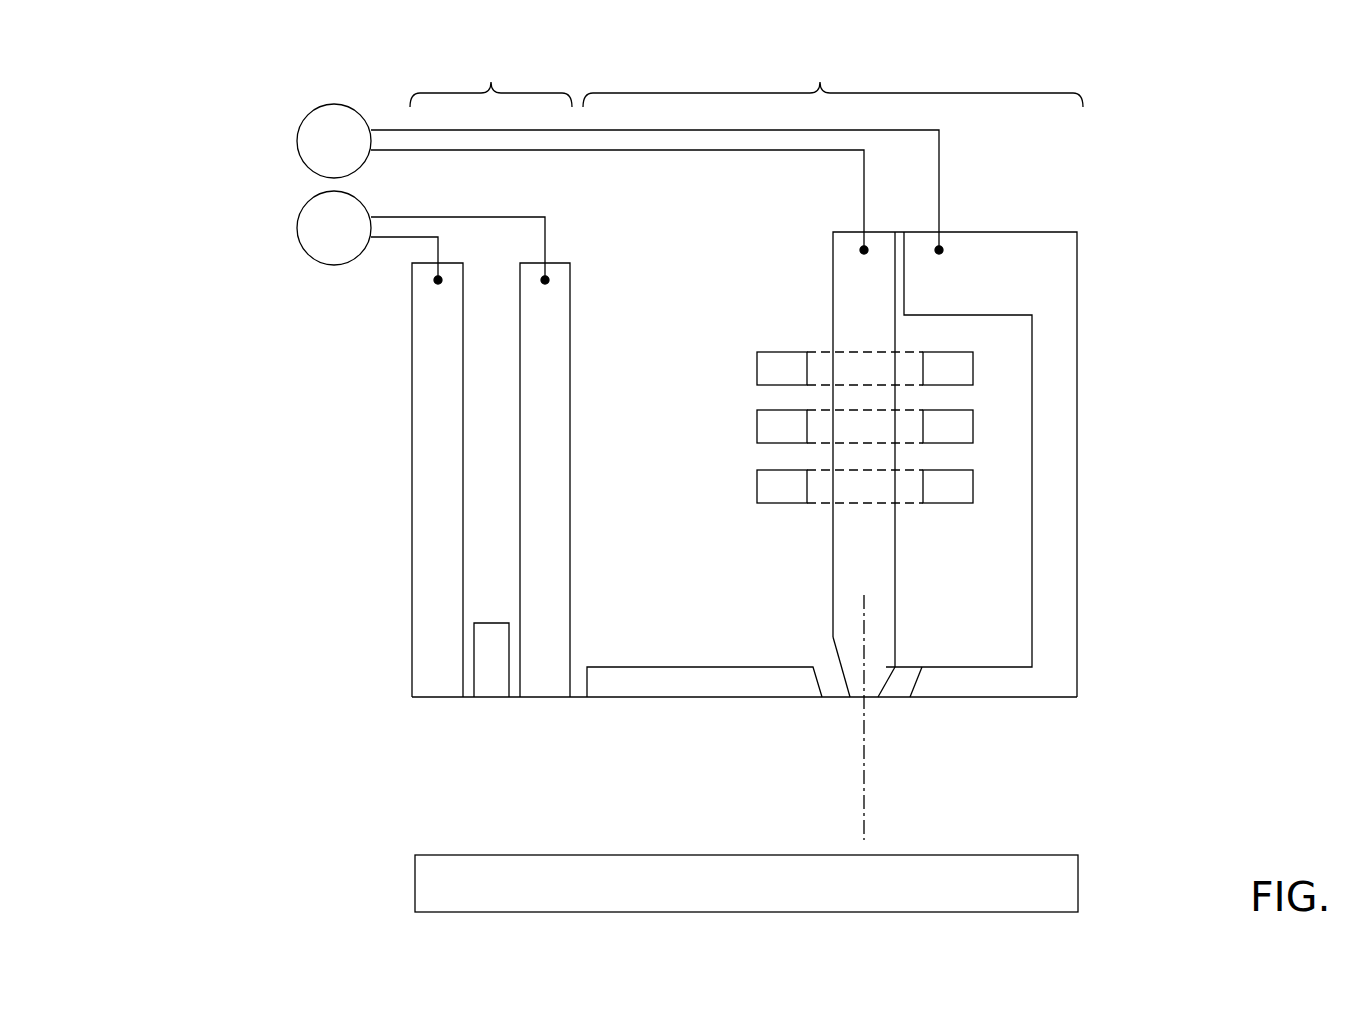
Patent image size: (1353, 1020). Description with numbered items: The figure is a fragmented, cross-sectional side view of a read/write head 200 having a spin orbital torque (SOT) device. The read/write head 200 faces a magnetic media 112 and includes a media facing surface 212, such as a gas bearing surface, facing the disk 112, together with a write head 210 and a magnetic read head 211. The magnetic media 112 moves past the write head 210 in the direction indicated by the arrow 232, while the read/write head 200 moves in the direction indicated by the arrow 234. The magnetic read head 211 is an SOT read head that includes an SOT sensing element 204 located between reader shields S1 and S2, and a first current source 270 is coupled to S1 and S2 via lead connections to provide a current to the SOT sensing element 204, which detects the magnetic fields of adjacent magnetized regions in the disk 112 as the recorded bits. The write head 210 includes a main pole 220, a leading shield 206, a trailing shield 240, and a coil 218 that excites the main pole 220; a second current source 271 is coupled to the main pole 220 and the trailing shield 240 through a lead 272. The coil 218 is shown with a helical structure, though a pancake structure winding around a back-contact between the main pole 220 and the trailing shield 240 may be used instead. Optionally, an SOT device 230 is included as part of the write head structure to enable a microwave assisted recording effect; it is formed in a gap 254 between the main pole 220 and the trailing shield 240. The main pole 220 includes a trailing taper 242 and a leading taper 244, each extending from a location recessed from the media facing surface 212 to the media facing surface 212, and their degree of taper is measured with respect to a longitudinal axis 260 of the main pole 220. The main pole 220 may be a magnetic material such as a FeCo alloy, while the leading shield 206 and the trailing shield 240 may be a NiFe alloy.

The read/write head 200 is at (152, 90).
The magnetic read head 211 is at (491, 73).
The write head 210 is at (833, 73).
The second current source 271 is at (298, 130).
The first current source 270 is at (298, 217).
The current lead 272 is at (900, 237).
The reader shield S1 is at (432, 697).
The reader shield S2 is at (543, 697).
The SOT sensing element 204 is at (488, 697).
The leading shield 206 is at (639, 697).
The trailing shield 240 is at (1053, 685).
The media facing surface 212 is at (990, 700).
The main pole 220 is at (880, 557).
The spin orbital torque device 230 is at (900, 687).
The coil 218 is at (778, 503).
The leading taper 244 is at (842, 672).
The trailing taper 242 is at (888, 667).
The gap 254 is at (835, 690).
The longitudinal axis 260 is at (864, 803).
The arrow 232 is at (1028, 837).
The arrow 234 is at (326, 419).
The magnetic media 112 is at (1078, 880).